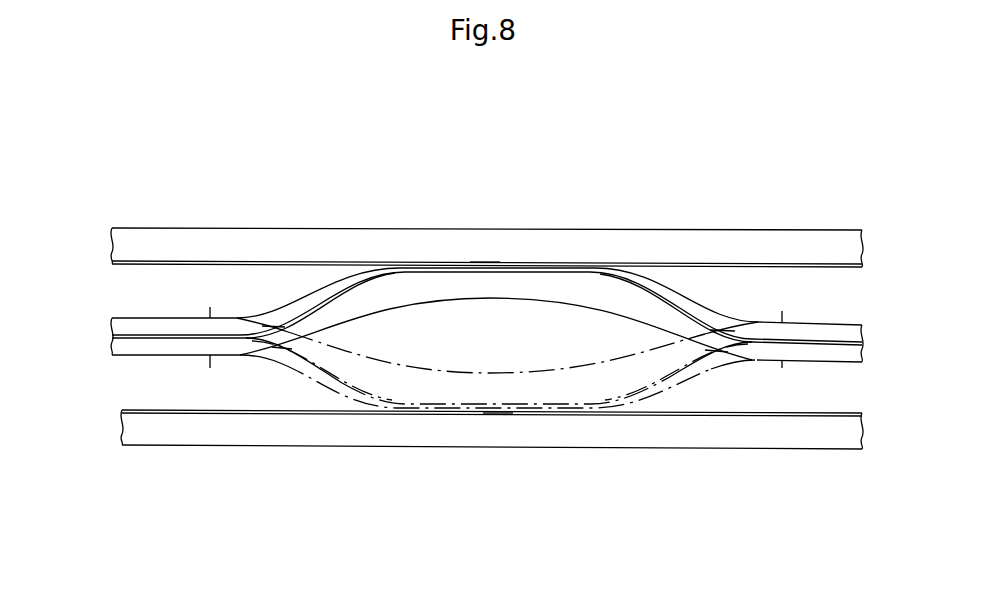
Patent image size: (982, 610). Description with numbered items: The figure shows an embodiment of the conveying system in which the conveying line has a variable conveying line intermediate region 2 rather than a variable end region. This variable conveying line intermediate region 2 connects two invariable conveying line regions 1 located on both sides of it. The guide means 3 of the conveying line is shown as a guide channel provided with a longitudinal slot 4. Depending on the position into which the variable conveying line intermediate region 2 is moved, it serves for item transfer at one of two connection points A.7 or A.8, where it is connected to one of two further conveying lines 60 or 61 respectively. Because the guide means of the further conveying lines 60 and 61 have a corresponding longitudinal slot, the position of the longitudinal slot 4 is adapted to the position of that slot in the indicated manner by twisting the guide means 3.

The invariable conveying line region 1 is at (142, 311).
The variable conveying line intermediate region 2 is at (498, 306).
The guide means 3 is at (810, 351).
The longitudinal slot 4 is at (223, 262).
The further conveying line 60 is at (822, 248).
The further conveying line 61 is at (818, 434).
The connection point A.7 is at (485, 263).
The connection point A.8 is at (498, 416).